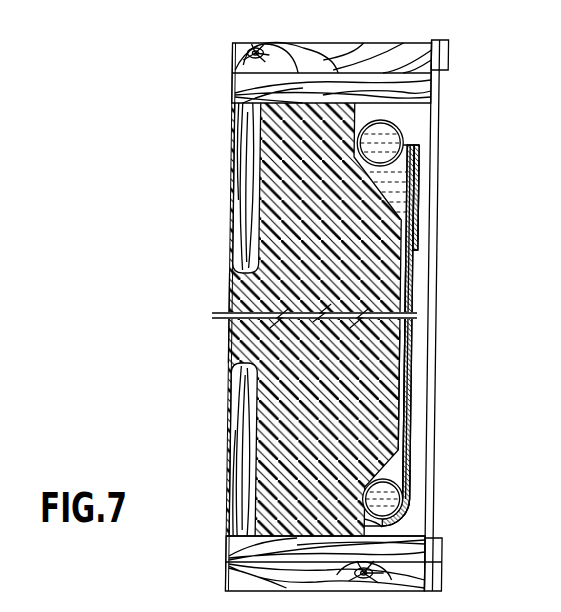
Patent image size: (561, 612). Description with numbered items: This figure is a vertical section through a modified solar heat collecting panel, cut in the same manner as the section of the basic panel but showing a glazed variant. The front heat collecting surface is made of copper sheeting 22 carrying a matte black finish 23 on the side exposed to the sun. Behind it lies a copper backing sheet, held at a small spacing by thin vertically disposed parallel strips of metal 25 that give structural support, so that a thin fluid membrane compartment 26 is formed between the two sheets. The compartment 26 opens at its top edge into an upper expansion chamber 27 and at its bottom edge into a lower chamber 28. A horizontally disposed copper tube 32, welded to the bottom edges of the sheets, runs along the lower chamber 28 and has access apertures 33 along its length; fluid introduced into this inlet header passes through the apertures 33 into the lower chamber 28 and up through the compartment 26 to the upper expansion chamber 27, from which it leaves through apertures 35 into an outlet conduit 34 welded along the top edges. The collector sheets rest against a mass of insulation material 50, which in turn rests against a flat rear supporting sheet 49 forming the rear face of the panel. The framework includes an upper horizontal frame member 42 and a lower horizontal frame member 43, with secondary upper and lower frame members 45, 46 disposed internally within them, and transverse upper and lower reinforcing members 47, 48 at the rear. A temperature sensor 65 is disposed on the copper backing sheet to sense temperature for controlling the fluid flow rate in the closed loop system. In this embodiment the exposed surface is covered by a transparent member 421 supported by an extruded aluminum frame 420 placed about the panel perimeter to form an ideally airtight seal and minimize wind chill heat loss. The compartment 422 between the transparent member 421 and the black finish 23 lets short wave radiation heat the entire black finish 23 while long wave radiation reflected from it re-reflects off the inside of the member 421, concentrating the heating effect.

The copper sheeting 22 is at (416, 314).
The matte black finish 23 is at (413, 290).
The parallel strips of metal 25 is at (404, 368).
The compartment 26 is at (404, 342).
The upper expansion chamber 27 is at (418, 185).
The lower chamber 28 is at (409, 466).
The horizontally disposed tube 32 is at (390, 522).
The access apertures 33 is at (403, 511).
The outlet conduit 34 is at (377, 149).
The apertures 35 is at (433, 172).
The upper horizontal frame member 42 is at (243, 53).
The lower horizontal frame member 43 is at (245, 577).
The secondary upper frame member 45 is at (241, 95).
The secondary lower frame member 46 is at (231, 540).
The transverse upper reinforcing member 47 is at (244, 243).
The transverse lower reinforcing member 48 is at (242, 436).
The flat rear supporting sheet 49 is at (232, 343).
The insulation material 50 is at (412, 253).
The temperature sensor 65 is at (417, 233).
The frame 420 is at (438, 562).
The transparent member 421 is at (437, 127).
The compartment 422 is at (428, 399).